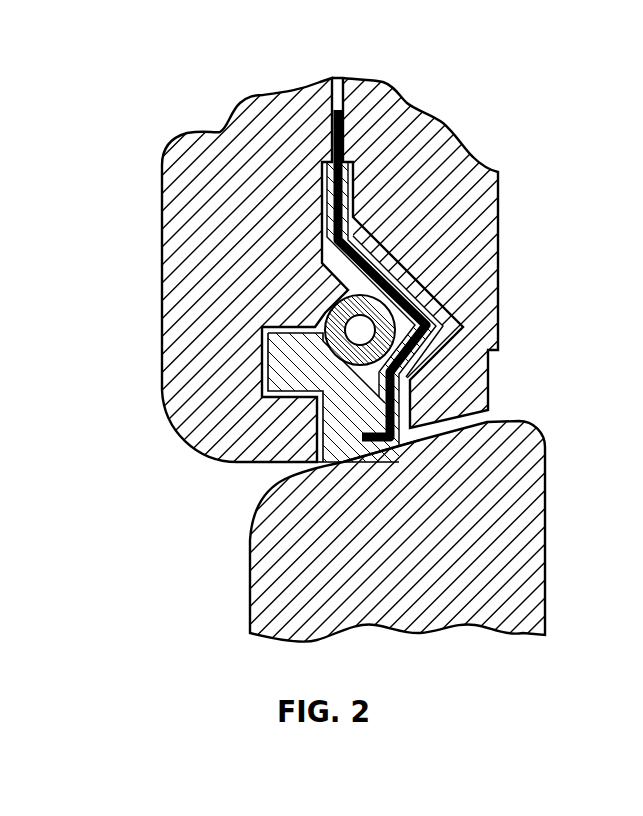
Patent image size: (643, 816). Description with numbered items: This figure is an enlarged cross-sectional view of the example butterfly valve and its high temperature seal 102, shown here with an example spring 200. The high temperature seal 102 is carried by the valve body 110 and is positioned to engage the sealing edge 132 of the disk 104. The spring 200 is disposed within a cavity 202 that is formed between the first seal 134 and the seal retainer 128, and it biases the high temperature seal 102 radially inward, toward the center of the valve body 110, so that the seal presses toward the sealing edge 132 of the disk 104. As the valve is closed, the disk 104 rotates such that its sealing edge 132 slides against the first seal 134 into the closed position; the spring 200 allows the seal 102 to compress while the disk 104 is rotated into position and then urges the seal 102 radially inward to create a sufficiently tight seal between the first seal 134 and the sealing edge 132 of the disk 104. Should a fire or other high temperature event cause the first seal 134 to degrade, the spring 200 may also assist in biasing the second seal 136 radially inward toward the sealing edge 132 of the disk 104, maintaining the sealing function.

The high temperature seal 102 is at (300, 419).
The disk 104 is at (545, 447).
The valve body 110 is at (432, 193).
The seal retainer 128 is at (253, 138).
The sealing edge 132 is at (357, 463).
The first seal 134 is at (280, 363).
The second seal 136 is at (405, 283).
The spring 200 is at (360, 332).
The cavity 202 is at (322, 333).